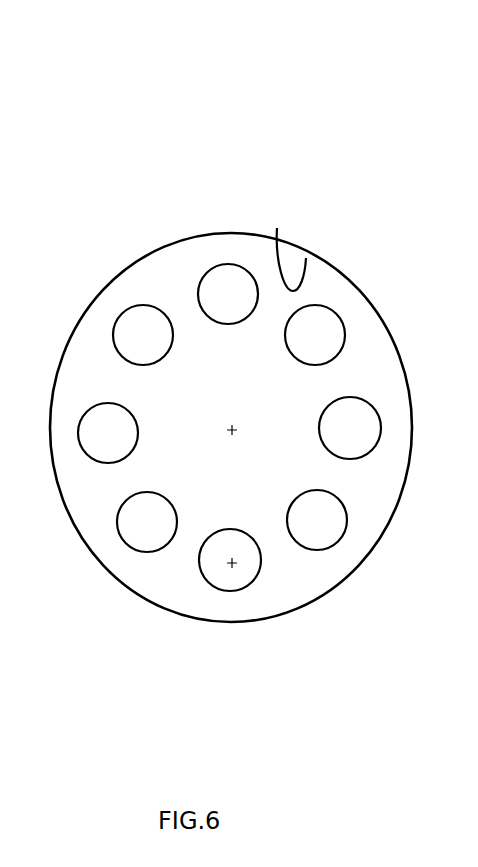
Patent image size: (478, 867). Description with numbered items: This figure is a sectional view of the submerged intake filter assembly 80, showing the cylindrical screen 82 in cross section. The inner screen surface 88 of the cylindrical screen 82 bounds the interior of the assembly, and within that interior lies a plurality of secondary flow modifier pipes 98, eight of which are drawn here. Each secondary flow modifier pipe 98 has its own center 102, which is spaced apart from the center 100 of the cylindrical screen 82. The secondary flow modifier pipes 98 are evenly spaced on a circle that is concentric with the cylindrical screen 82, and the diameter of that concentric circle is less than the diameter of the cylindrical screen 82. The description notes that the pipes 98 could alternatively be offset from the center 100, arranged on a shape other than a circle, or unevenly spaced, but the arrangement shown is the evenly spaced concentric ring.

The submerged intake filter assembly 80 is at (257, 88).
The cylindrical screen 82 is at (328, 263).
The inner screen surface 88 is at (278, 225).
The secondary flow modifier pipes 98 is at (260, 579).
The center 100 is at (227, 434).
The center of secondary flow modifier pipe 102 is at (226, 565).